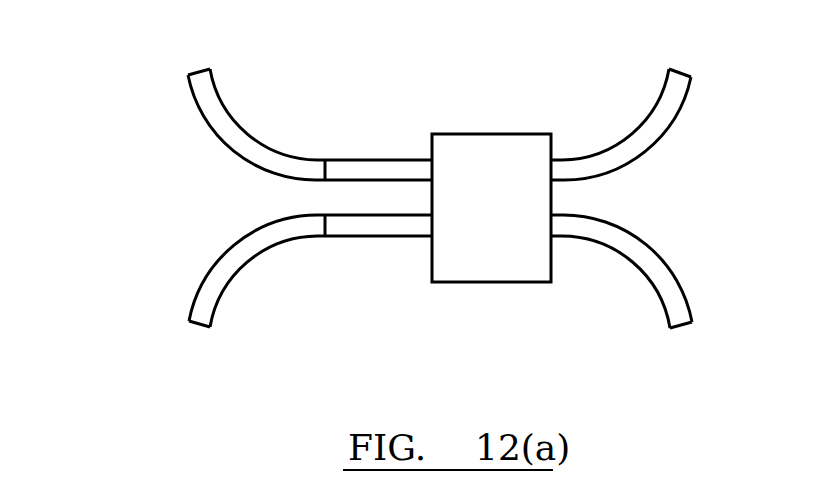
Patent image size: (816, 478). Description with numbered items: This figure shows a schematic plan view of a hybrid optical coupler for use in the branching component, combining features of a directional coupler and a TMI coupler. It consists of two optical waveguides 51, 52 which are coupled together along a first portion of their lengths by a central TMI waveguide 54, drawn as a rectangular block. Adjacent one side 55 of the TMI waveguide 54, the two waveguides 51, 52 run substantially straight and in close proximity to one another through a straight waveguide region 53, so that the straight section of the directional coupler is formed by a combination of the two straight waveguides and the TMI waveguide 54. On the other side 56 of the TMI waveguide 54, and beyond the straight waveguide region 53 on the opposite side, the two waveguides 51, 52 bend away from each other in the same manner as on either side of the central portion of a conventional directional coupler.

The optical waveguide 51 is at (213, 104).
The optical waveguide 52 is at (213, 299).
The straight waveguide region 53 is at (377, 236).
The TMI waveguide 54 is at (492, 134).
The one side of the TMI waveguide 55 is at (430, 142).
The other side of the TMI waveguide 56 is at (552, 267).